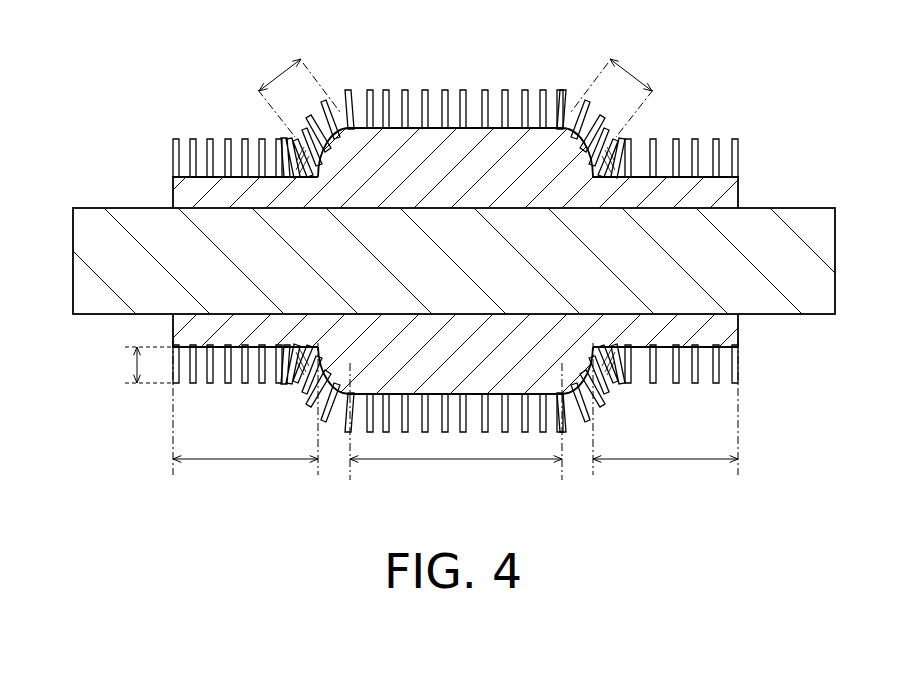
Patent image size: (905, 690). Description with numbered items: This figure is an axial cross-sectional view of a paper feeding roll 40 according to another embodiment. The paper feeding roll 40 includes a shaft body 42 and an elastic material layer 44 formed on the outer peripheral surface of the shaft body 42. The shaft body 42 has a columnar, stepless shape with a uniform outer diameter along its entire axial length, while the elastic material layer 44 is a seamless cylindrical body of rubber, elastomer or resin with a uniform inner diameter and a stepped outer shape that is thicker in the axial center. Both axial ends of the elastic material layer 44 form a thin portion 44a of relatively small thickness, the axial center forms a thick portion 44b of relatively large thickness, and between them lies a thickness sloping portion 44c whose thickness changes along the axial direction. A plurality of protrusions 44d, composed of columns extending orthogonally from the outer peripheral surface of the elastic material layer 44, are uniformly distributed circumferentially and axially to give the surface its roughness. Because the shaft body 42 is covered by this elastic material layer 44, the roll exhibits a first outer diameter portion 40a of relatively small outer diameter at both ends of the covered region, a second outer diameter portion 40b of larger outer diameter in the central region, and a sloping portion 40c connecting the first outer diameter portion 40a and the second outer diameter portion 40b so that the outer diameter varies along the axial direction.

The paper feeding roll 40 is at (452, 257).
The shaft body 42 is at (119, 217).
The elastic material layer 44 is at (452, 219).
The thin portion 44a is at (187, 196).
The thick portion 44b is at (512, 165).
The thickness sloping portion 44c is at (341, 148).
The protrusions 44d is at (204, 142).
The first outer diameter portion 40a is at (455, 423).
The second outer diameter portion 40b is at (456, 434).
The sloping portion 40c is at (456, 86).